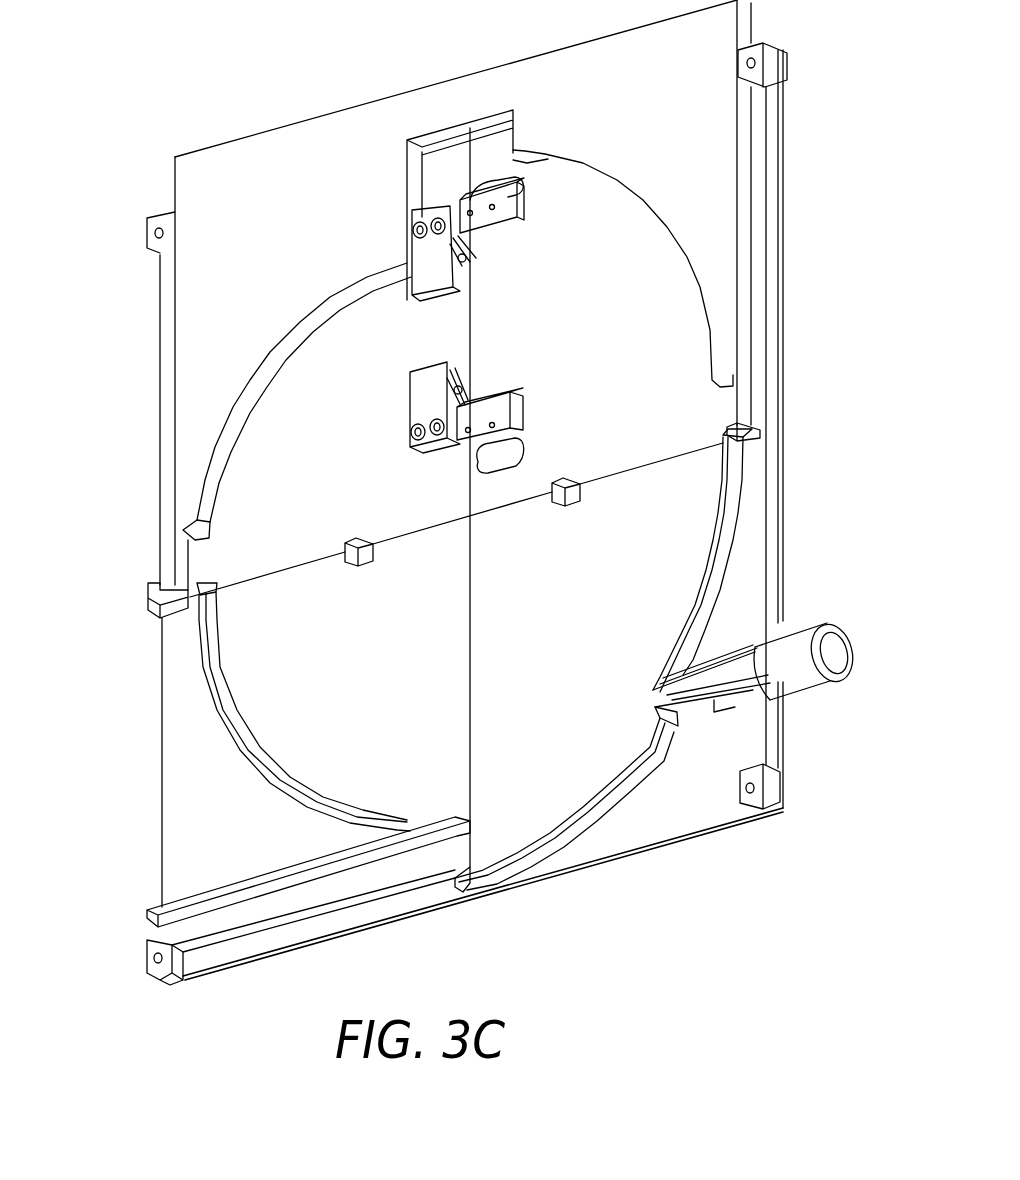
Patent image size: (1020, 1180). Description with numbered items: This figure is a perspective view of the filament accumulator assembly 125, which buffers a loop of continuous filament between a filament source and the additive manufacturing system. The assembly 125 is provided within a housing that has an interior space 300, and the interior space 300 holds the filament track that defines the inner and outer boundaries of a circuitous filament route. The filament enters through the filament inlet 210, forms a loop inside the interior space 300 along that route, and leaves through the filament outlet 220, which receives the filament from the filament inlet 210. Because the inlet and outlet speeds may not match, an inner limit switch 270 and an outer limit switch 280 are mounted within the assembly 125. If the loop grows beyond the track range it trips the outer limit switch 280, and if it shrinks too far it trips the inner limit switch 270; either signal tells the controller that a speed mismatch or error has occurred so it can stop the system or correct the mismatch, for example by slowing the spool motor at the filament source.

The filament accumulator assembly 125 is at (114, 99).
The interior space 300 is at (643, 517).
The filament outlet 220 is at (153, 930).
The filament inlet 210 is at (830, 653).
The outer limit switch 280 is at (513, 253).
The inner limit switch 270 is at (495, 392).